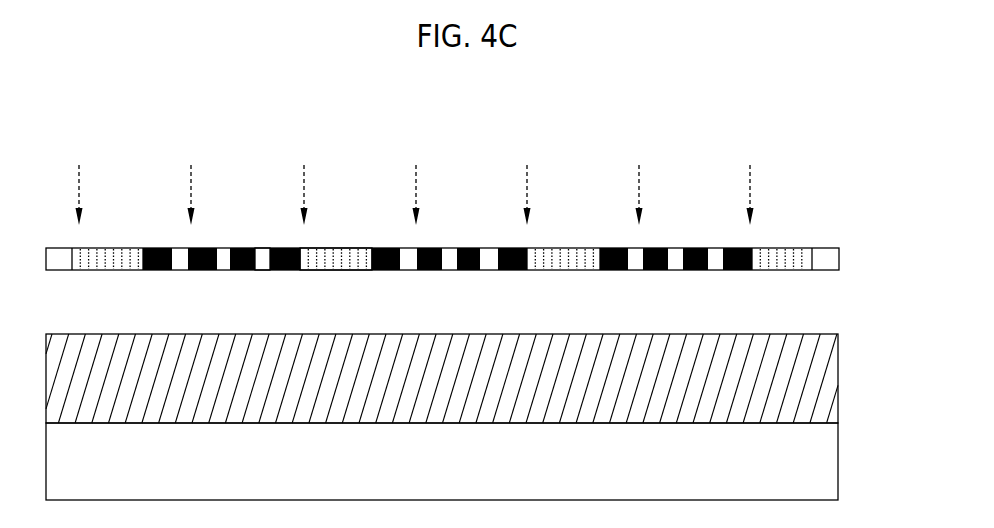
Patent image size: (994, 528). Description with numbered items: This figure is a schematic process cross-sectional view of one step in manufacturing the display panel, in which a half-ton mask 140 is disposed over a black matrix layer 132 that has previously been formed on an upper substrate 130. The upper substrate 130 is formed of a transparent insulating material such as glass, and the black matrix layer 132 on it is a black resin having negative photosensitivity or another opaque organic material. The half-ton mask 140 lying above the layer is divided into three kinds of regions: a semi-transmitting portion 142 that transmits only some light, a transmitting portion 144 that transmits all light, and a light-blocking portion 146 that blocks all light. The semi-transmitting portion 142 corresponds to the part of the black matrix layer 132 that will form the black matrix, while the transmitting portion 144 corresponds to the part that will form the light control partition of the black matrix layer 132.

The upper substrate 130 is at (825, 471).
The black matrix layer 132 is at (825, 378).
The half-ton mask 140 is at (464, 208).
The semi-transmitting portion 142 is at (343, 248).
The transmitting portion 144 is at (261, 248).
The light-blocking portion 146 is at (158, 248).